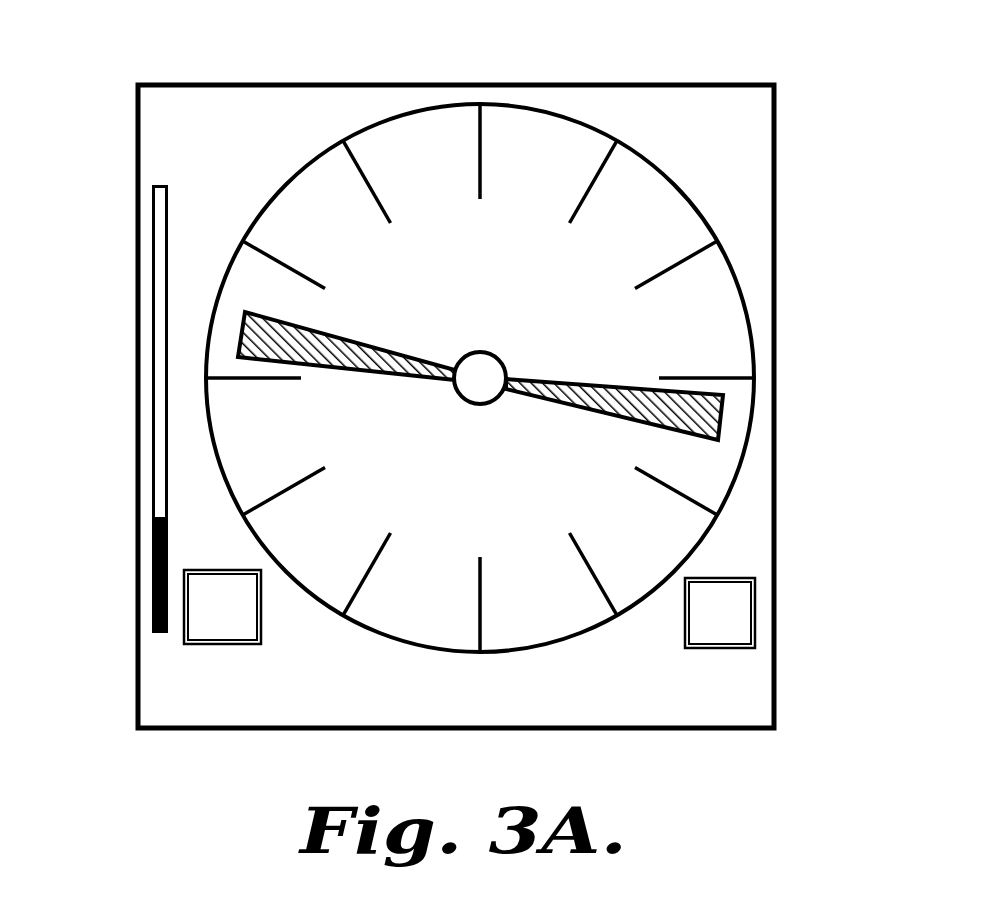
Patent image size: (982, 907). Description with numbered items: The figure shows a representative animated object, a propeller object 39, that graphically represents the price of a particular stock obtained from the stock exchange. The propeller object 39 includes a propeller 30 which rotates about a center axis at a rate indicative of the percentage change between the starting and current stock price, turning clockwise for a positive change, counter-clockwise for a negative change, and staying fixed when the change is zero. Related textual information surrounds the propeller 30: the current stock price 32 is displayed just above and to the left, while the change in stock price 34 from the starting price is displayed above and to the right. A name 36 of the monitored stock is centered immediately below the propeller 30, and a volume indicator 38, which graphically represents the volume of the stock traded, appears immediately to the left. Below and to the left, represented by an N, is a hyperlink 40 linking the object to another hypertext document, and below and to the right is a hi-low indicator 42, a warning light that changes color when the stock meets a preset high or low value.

The propeller 30 is at (725, 424).
The current stock price 32 is at (160, 118).
The change in stock price 34 is at (722, 127).
The name 36 is at (320, 715).
The volume indicator 38 is at (150, 577).
The propeller object 39 is at (343, 78).
The hyperlink 40 is at (193, 645).
The hi-low indicator 42 is at (732, 605).